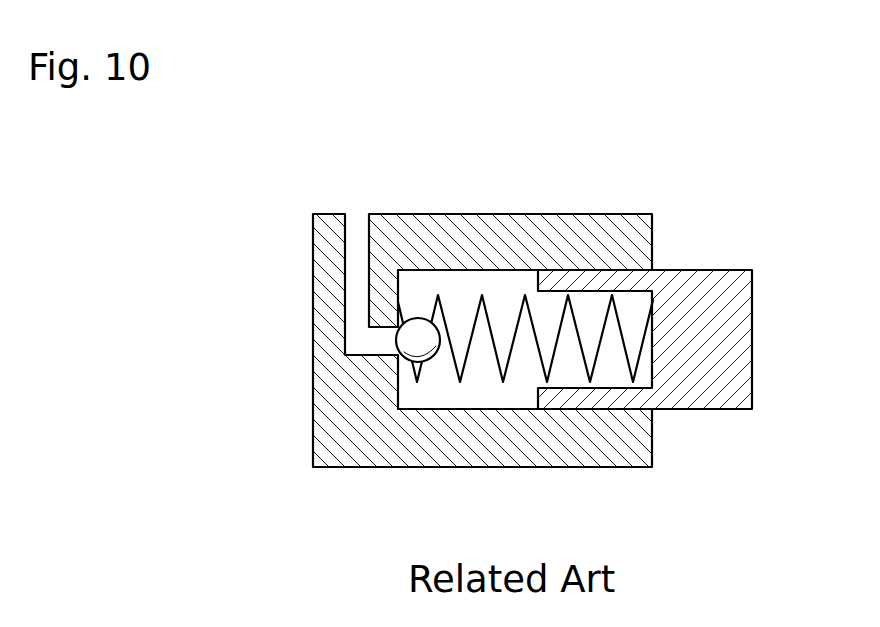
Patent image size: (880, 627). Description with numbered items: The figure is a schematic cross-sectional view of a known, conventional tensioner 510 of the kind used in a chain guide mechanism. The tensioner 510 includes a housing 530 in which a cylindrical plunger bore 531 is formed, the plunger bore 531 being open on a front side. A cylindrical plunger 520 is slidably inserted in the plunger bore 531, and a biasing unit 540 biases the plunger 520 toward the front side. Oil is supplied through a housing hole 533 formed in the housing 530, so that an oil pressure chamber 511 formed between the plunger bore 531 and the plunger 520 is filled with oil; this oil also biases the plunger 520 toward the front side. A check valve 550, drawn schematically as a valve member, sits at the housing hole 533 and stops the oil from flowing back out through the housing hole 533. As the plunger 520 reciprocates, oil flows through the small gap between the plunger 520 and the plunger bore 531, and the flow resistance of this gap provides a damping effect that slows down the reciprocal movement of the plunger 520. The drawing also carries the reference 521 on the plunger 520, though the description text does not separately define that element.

The tensioner 510 is at (240, 193).
The oil pressure chamber 511 is at (500, 288).
The plunger 520 is at (737, 362).
The piston upper flange 521 is at (606, 293).
The housing 530 is at (425, 443).
The plunger bore 531 is at (480, 367).
The housing hole 533 is at (358, 210).
The biasing unit 540 is at (598, 352).
The check valve 550 is at (395, 340).